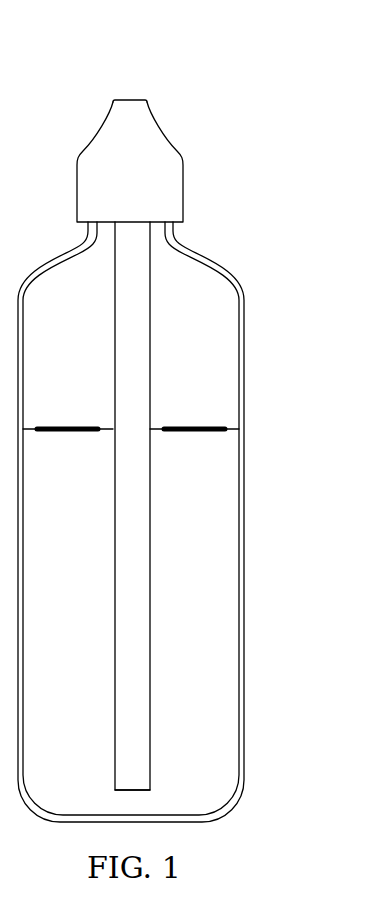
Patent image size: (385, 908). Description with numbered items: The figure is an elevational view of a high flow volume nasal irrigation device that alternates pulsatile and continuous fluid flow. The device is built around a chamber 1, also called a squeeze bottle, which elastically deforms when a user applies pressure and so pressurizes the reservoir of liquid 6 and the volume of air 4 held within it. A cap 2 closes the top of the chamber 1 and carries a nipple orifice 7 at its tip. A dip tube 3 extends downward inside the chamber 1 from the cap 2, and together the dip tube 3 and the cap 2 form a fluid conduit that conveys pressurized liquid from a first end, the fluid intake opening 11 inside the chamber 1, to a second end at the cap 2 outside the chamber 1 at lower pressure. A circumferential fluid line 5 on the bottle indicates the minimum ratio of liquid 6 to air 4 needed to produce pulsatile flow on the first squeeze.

The chamber 1 is at (220, 255).
The cap 2 is at (140, 135).
The dip tube 3 is at (133, 355).
The volume of air 4 is at (210, 392).
The fluid line 5 is at (180, 432).
The reservoir of liquid 6 is at (212, 695).
The nipple orifice 7 is at (130, 100).
The fluid intake opening 11 is at (147, 792).